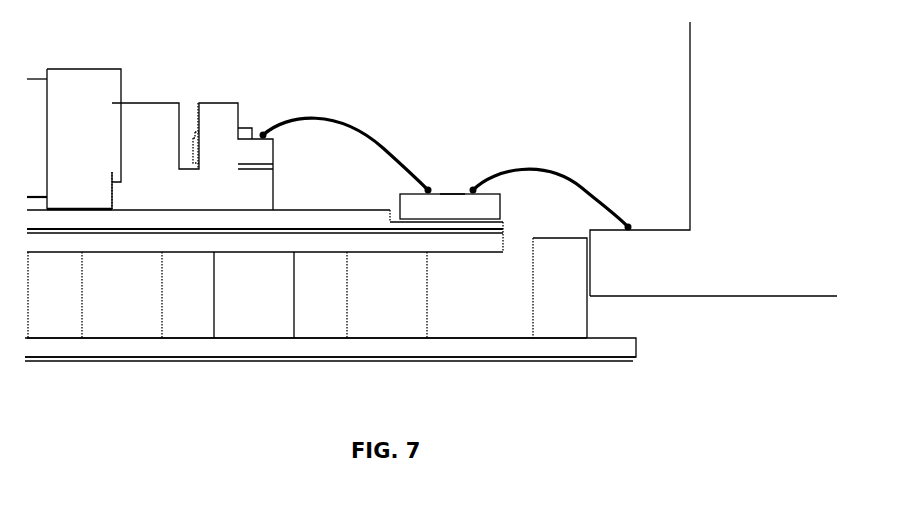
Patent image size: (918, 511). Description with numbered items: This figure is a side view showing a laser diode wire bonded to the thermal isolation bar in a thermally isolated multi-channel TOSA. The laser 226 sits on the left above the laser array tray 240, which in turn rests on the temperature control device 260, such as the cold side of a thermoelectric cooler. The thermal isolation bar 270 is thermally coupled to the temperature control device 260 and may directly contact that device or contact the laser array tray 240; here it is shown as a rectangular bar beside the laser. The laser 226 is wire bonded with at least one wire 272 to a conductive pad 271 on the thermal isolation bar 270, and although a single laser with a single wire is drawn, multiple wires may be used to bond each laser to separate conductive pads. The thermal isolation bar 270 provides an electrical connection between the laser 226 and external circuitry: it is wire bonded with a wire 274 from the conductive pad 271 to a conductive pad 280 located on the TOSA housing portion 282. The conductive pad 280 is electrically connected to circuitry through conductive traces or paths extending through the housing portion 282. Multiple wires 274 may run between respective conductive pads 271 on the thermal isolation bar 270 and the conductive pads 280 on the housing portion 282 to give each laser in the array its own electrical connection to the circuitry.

The laser 226 is at (266, 96).
The laser array tray 240 is at (133, 224).
The temperature control device 260 is at (455, 376).
The thermal isolation bar 270 is at (400, 197).
The conductive pad 271 is at (452, 193).
The wire 272 is at (373, 130).
The wire 274 is at (577, 170).
The conductive pad 280 is at (640, 228).
The TOSA housing portion 282 is at (673, 292).